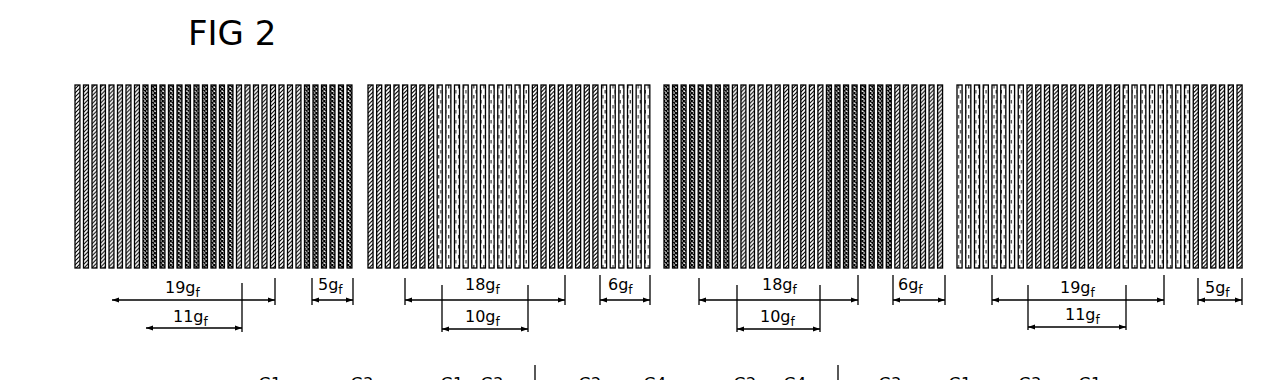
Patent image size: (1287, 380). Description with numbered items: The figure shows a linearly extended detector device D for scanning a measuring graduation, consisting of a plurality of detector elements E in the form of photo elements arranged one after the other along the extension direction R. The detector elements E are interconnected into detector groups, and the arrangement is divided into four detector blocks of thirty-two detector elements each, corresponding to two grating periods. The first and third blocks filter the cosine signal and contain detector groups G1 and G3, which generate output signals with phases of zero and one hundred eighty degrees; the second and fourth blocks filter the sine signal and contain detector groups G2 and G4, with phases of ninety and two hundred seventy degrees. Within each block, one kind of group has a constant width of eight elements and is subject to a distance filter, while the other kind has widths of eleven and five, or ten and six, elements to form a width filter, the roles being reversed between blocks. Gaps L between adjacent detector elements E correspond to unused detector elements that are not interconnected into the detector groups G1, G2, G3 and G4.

The detector groups G1 is at (75, 80).
The detector groups G2 is at (368, 80).
The detector groups G3 is at (143, 80).
The detector groups G4 is at (437, 80).
The gaps L is at (964, 302).
The detector device D is at (1189, 283).
The detector elements E is at (1242, 253).
The extension direction R is at (1286, 185).